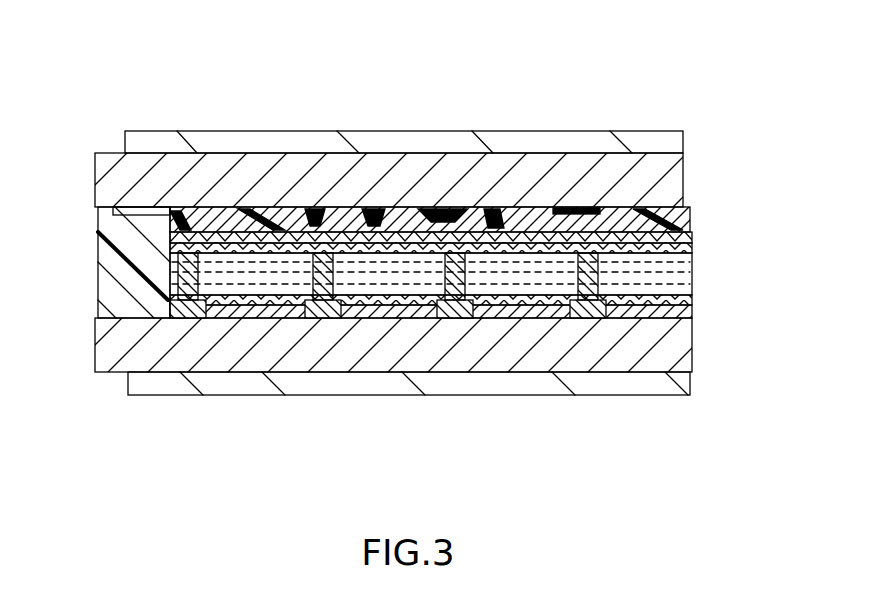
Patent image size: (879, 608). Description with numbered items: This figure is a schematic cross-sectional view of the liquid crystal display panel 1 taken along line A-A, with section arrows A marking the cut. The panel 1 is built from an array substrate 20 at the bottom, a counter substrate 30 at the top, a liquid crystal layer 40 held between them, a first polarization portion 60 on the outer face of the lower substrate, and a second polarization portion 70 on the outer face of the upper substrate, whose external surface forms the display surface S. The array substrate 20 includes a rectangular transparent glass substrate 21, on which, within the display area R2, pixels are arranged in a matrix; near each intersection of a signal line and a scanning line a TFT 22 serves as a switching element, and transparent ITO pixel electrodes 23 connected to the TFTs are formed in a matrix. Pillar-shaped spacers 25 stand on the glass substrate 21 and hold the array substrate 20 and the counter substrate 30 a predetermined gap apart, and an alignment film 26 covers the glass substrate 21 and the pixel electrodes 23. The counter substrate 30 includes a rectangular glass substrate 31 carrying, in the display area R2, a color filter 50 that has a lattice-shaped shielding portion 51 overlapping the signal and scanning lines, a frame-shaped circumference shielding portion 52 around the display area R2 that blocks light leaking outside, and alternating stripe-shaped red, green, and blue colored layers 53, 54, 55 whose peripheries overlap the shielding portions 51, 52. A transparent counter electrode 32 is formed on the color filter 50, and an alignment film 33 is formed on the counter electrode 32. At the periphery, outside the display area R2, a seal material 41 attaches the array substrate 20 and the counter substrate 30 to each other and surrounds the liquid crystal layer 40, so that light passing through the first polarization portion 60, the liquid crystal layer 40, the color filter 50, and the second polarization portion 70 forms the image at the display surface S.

The liquid crystal display panel 1 is at (100, 78).
The array substrate 20 is at (407, 345).
The glass substrate 21 is at (97, 347).
The TFT 22 is at (188, 320).
The pixel electrode 23 is at (244, 312).
The pillar-shaped spacer 25 is at (200, 277).
The alignment film 26 is at (693, 302).
The counter substrate 30 is at (401, 180).
The glass substrate 31 is at (97, 183).
The counter electrode 32 is at (694, 237).
The alignment film 33 is at (694, 252).
The liquid crystal layer 40 is at (453, 274).
The seal material 41 is at (100, 275).
The color filter 50 is at (441, 154).
The shielding portion 51 is at (316, 212).
The circumference shielding portion 52 is at (180, 212).
The red colored layer 53 is at (248, 212).
The green colored layer 54 is at (375, 214).
The blue colored layer 55 is at (493, 212).
The first polarization portion 60 is at (130, 385).
The second polarization portion 70 is at (125, 142).
The display surface S is at (441, 212).
The display area R2 is at (683, 122).
The line A- A is at (97, 405).